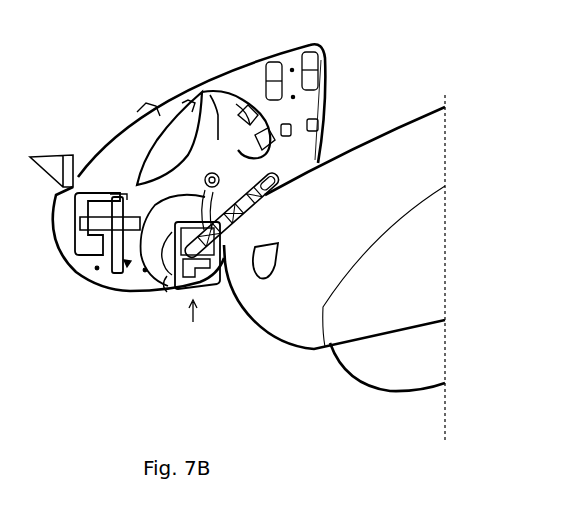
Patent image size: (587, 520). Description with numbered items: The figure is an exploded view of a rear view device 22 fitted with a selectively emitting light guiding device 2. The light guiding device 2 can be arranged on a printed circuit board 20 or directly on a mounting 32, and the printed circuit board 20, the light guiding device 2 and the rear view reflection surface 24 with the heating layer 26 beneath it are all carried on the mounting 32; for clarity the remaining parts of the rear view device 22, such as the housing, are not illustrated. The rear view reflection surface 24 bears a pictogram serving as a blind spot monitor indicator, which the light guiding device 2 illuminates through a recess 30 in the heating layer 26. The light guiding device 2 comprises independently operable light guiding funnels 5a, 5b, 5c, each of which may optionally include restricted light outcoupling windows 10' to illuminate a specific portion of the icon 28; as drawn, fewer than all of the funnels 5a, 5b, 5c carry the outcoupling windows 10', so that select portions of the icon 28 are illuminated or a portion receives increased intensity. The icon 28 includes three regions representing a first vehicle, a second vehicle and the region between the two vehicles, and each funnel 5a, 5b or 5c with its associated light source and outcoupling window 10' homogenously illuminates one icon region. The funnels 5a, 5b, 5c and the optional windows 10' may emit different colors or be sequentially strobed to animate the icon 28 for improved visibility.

The mounting 32 is at (123, 147).
The rear view device 22 is at (398, 56).
The printed circuit board 20 is at (80, 277).
The light guiding device 2 is at (163, 288).
The light guiding funnel 5a is at (213, 198).
The light guiding funnel 5b is at (244, 252).
The light guiding funnel 5c is at (167, 292).
The restricted light outcoupling window 10' is at (195, 197).
The recess 30 is at (262, 280).
The heating layer 26 is at (325, 347).
The icon 28 is at (282, 322).
The rear view reflection surface 24 is at (388, 390).